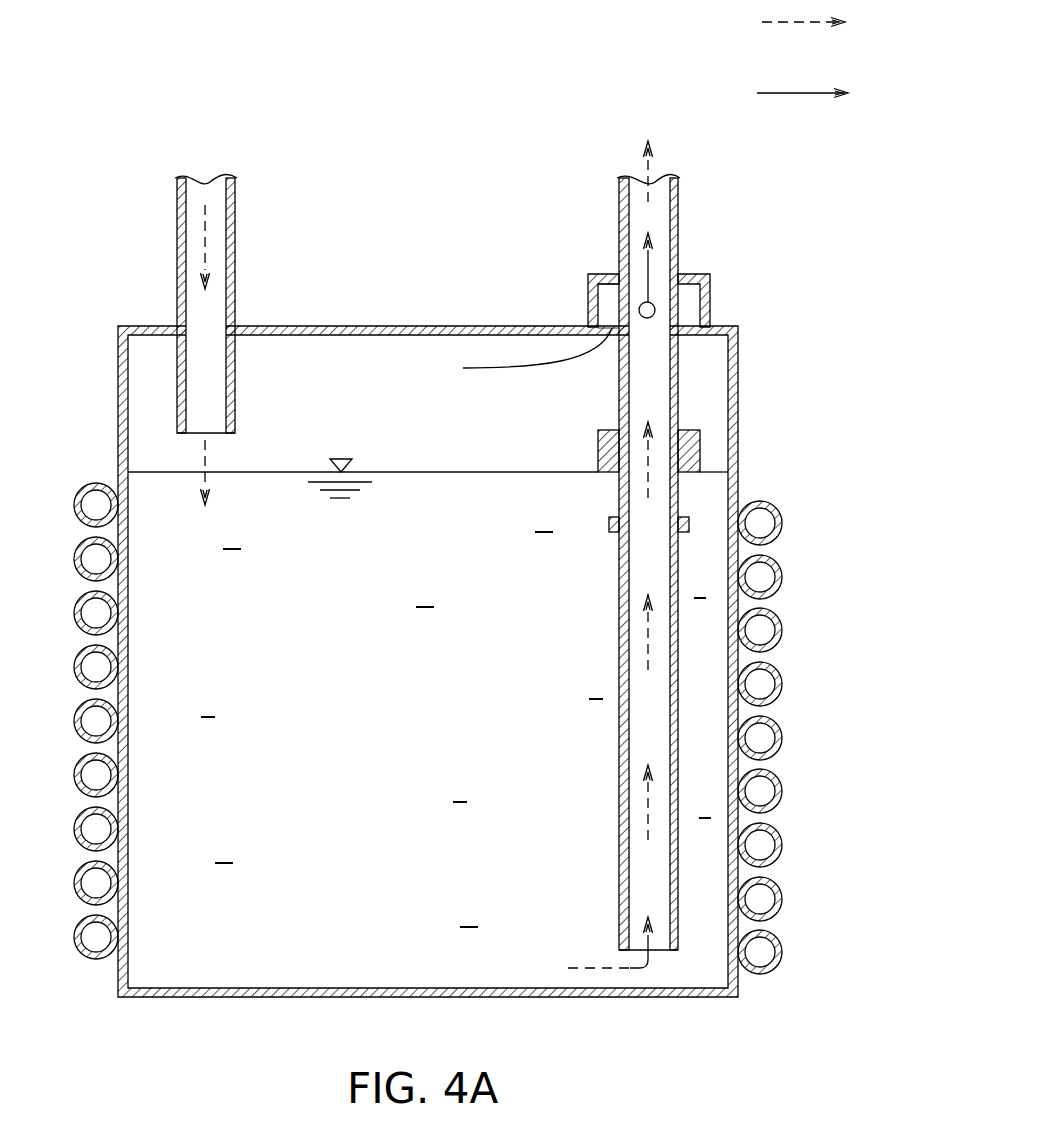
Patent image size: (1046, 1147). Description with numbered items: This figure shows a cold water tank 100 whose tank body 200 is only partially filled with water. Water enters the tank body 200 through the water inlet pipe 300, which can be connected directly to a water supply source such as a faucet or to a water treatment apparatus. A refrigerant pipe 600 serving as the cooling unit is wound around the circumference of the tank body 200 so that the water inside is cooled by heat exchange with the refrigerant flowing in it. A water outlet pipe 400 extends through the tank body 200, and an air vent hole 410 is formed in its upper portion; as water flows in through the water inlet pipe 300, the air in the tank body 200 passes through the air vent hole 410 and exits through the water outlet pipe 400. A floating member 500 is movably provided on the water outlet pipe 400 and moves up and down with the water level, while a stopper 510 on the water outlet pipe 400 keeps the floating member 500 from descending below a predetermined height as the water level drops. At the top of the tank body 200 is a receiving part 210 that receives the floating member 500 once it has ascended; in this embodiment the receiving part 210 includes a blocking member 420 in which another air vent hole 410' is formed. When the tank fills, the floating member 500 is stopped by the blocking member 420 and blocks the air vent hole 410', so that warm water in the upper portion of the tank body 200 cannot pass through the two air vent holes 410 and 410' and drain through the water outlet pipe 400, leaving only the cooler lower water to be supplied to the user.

The cold water tank 100 is at (66, 211).
The tank body 200 is at (110, 380).
The receiving part 210 is at (590, 305).
The water inlet pipe 300 is at (182, 270).
The water outlet pipe 400 is at (678, 243).
The air vent hole 410 is at (727, 298).
The air vent hole 410' is at (585, 276).
The blocking member 420 is at (688, 337).
The floating member 500 is at (702, 447).
The stopper 510 is at (690, 522).
The refrigerant pipe 600 is at (780, 585).